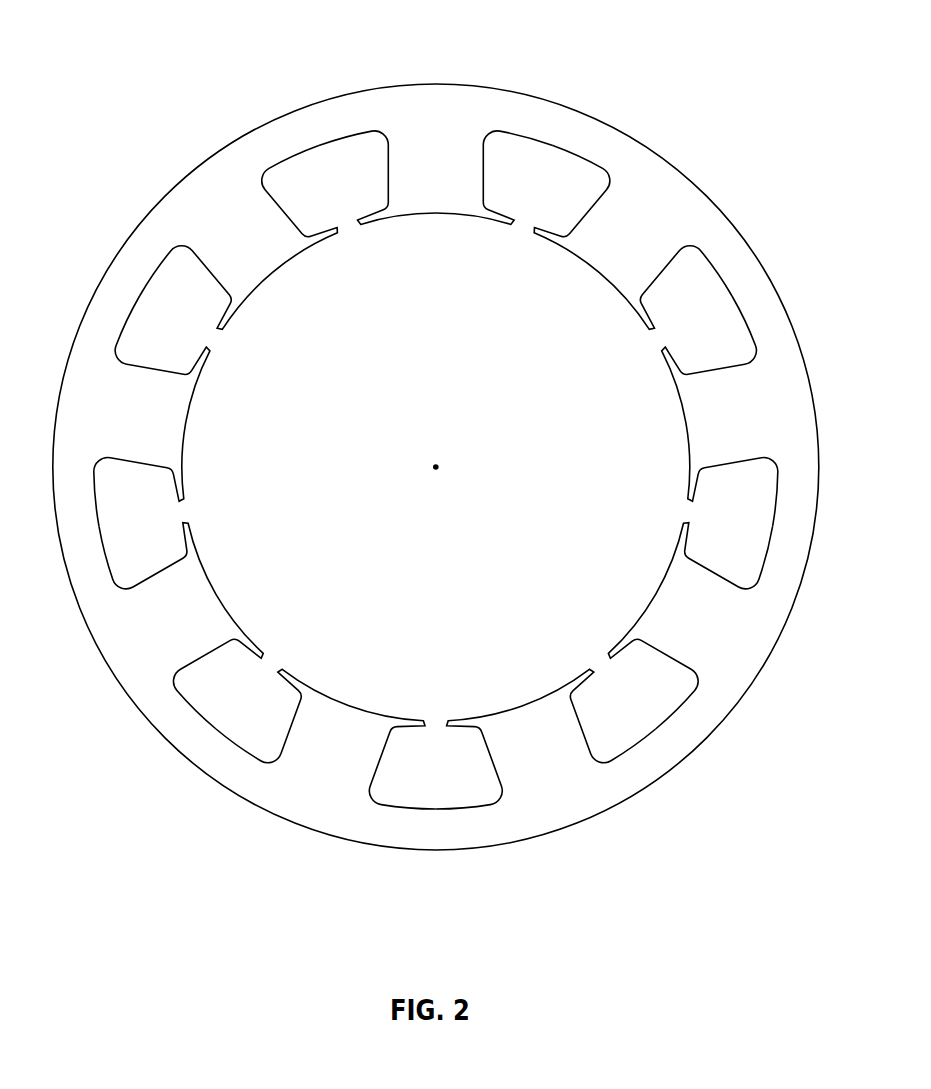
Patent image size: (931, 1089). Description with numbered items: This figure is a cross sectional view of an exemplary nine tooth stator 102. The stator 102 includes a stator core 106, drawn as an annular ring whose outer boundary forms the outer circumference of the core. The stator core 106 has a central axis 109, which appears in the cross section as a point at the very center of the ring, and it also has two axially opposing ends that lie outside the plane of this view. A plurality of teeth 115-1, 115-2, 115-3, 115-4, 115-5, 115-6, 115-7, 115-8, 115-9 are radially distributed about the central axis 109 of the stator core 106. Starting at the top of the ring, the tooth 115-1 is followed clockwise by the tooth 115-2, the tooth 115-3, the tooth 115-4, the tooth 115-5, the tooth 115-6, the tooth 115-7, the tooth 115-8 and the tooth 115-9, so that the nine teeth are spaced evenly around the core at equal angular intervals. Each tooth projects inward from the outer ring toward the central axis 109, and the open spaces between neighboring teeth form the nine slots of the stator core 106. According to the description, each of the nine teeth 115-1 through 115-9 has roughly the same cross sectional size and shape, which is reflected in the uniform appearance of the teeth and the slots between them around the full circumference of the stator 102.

The stator 102 is at (120, 54).
The stator core 106 is at (165, 193).
The central axis 109 is at (439, 468).
The tooth 115-1 is at (436, 178).
The tooth 115-2 is at (633, 238).
The tooth 115-3 is at (721, 411).
The tooth 115-4 is at (690, 626).
The tooth 115-5 is at (546, 739).
The tooth 115-6 is at (326, 739).
The tooth 115-7 is at (181, 626).
The tooth 115-8 is at (152, 411).
The tooth 115-9 is at (239, 238).